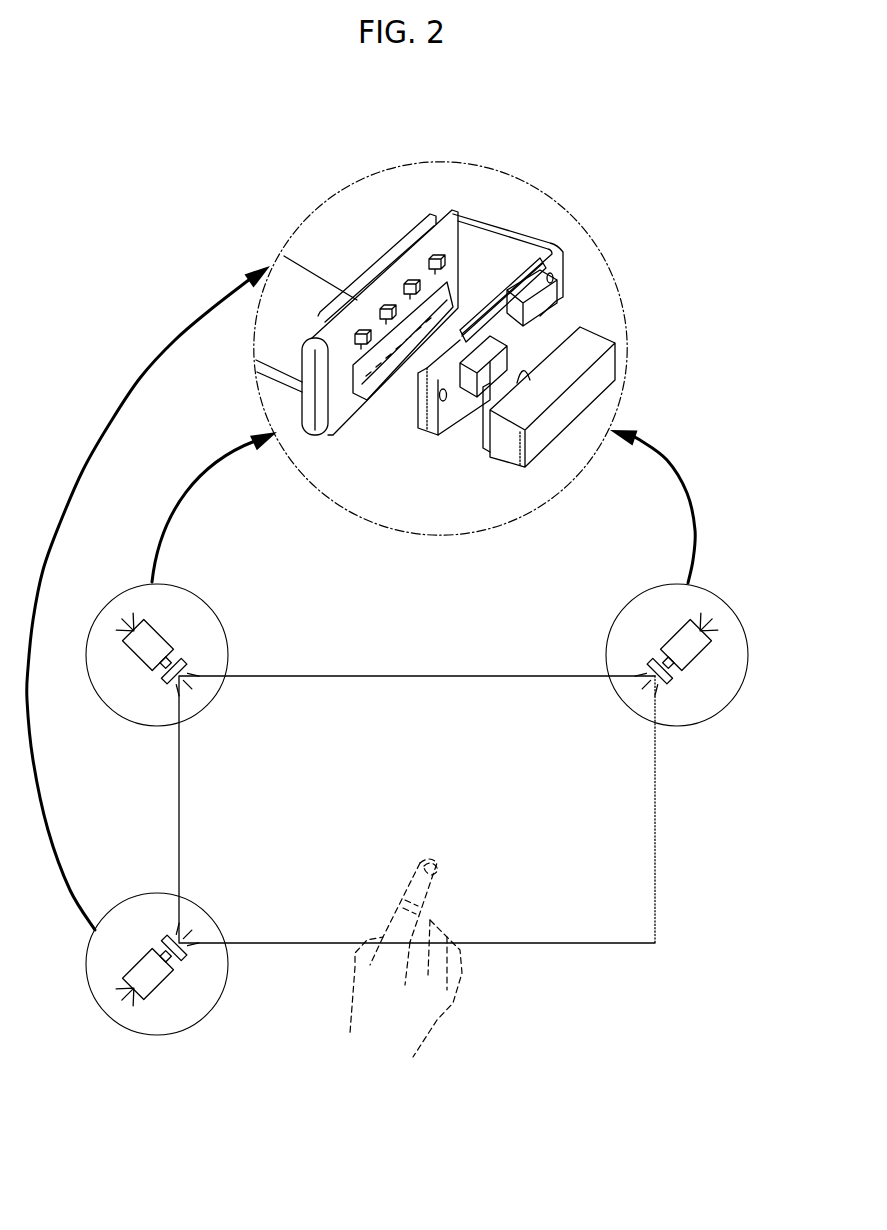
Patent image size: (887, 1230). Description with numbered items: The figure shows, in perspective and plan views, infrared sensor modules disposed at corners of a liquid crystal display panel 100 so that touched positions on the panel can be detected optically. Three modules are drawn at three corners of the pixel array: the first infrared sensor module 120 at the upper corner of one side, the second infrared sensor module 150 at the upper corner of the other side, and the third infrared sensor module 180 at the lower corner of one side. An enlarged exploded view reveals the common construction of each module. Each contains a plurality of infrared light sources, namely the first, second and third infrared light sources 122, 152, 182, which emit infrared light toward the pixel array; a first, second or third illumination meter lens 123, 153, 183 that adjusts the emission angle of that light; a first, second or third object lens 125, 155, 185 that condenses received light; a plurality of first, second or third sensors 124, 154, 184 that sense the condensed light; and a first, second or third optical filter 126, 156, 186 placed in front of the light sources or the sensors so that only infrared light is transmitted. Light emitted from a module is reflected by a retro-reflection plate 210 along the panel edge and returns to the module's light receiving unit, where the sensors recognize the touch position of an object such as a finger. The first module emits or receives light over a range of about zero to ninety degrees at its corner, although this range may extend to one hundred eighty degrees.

The liquid crystal display panel 100 is at (640, 810).
The retro-reflection plate 210 is at (656, 915).
The first infrared sensor module 120 is at (160, 642).
The second infrared sensor module 150 is at (674, 642).
The third infrared sensor module 180 is at (158, 978).
The first infrared light sources 122 is at (612, 280).
The second infrared light sources 152 is at (612, 280).
The third infrared light sources 182 is at (552, 300).
The first illumination meter lens 123 is at (565, 273).
The second illumination meter lens 153 is at (565, 273).
The third illumination meter lens 183 is at (538, 263).
The first sensors 124 is at (380, 400).
The second sensors 154 is at (380, 400).
The third sensors 184 is at (353, 418).
The first object lens 125 is at (546, 201).
The second object lens 155 is at (546, 201).
The third object lens 185 is at (497, 297).
The first optical filter 126 is at (610, 379).
The second optical filter 156 is at (610, 379).
The third optical filter 186 is at (592, 335).